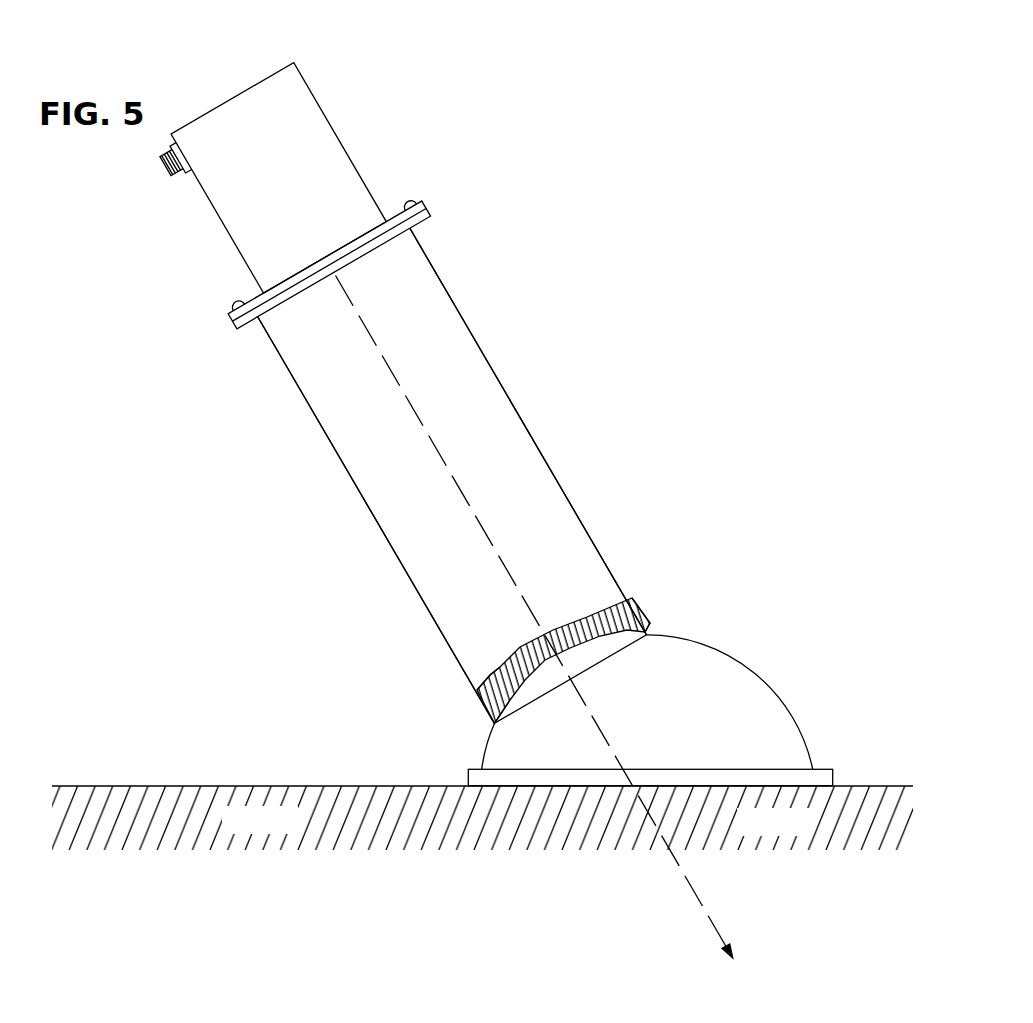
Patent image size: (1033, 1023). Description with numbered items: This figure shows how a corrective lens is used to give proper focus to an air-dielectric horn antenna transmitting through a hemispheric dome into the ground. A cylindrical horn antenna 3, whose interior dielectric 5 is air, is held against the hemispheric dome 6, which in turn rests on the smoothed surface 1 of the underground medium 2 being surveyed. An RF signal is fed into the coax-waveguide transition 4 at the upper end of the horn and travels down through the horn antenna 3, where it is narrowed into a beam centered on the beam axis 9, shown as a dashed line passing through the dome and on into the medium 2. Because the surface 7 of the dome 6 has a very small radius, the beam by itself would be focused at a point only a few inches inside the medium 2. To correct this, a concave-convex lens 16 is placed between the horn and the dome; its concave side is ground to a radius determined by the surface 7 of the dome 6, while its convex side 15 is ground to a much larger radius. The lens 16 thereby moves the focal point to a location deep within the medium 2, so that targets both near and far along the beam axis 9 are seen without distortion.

The smoothed surface 1 is at (877, 785).
The underground medium 2 is at (282, 821).
The cylindrical horn antenna 3 is at (437, 272).
The coax-waveguide transition 4 is at (330, 121).
The dielectric 5 is at (490, 437).
The hemispheric dome 6 is at (693, 663).
The surface of the dome 7 is at (620, 632).
The beam axis 9 is at (417, 410).
The convex side 15 is at (532, 642).
The concave-convex lens 16 is at (485, 674).